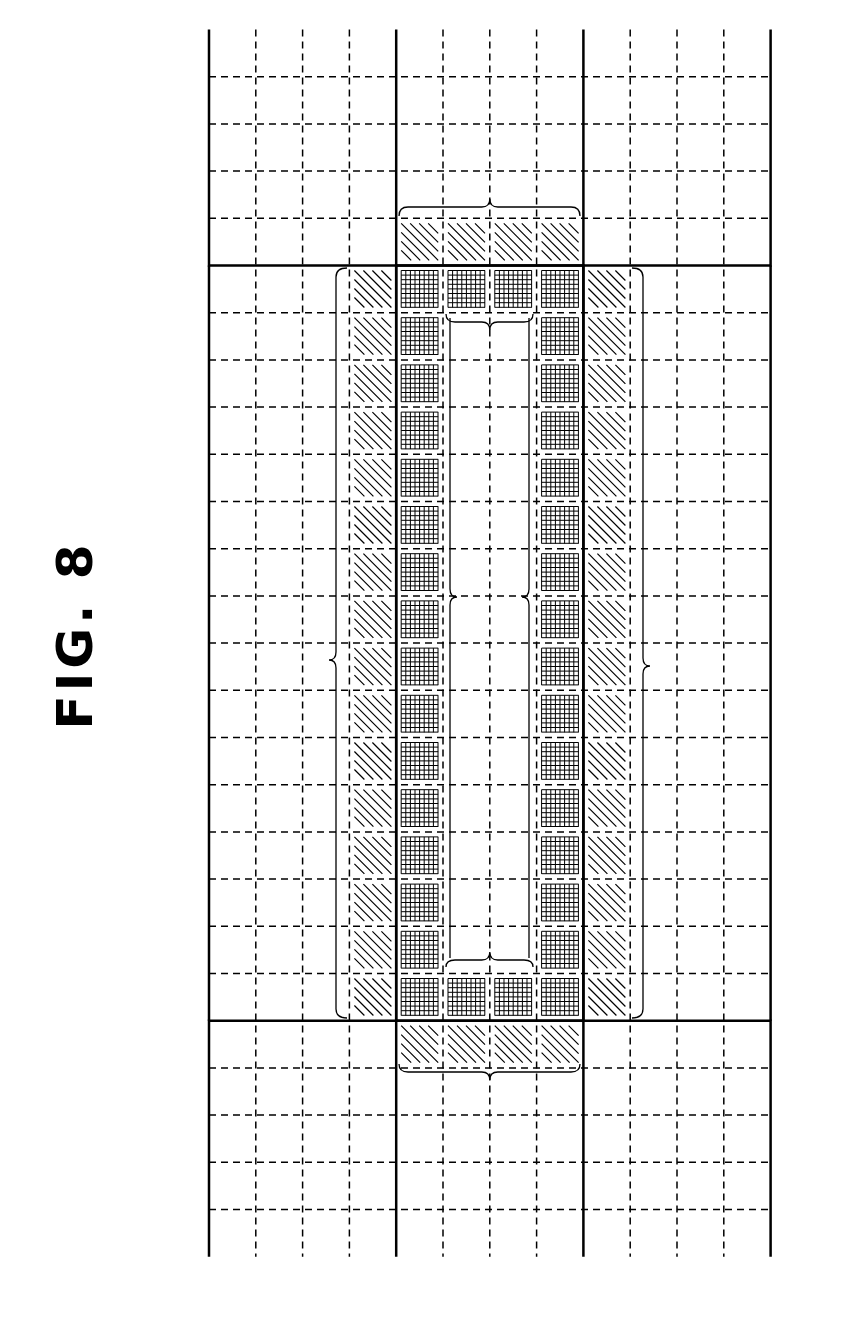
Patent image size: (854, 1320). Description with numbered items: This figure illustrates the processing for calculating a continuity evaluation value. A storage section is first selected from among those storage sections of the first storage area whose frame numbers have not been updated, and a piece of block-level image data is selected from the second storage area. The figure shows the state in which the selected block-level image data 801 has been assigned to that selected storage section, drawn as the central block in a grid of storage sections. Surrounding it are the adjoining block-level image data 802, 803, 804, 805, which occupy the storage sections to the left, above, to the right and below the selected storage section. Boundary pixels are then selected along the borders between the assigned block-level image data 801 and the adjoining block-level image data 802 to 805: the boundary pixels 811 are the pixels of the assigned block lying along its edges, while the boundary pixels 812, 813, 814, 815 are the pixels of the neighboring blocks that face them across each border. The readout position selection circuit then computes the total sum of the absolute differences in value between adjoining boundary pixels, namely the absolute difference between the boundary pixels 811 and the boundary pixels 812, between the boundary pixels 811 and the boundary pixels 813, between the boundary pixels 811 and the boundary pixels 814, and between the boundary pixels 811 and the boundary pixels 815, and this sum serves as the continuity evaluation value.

The block-level image data 801 is at (503, 819).
The adjoining block-level image data 802 is at (297, 851).
The adjoining block-level image data 803 is at (503, 49).
The adjoining block-level image data 804 is at (697, 851).
The adjoining block-level image data 805 is at (481, 1172).
The boundary pixels 811 is at (489, 643).
The boundary pixels 812 is at (340, 643).
The boundary pixels 813 is at (489, 198).
The boundary pixels 814 is at (638, 643).
The boundary pixels 815 is at (489, 1084).